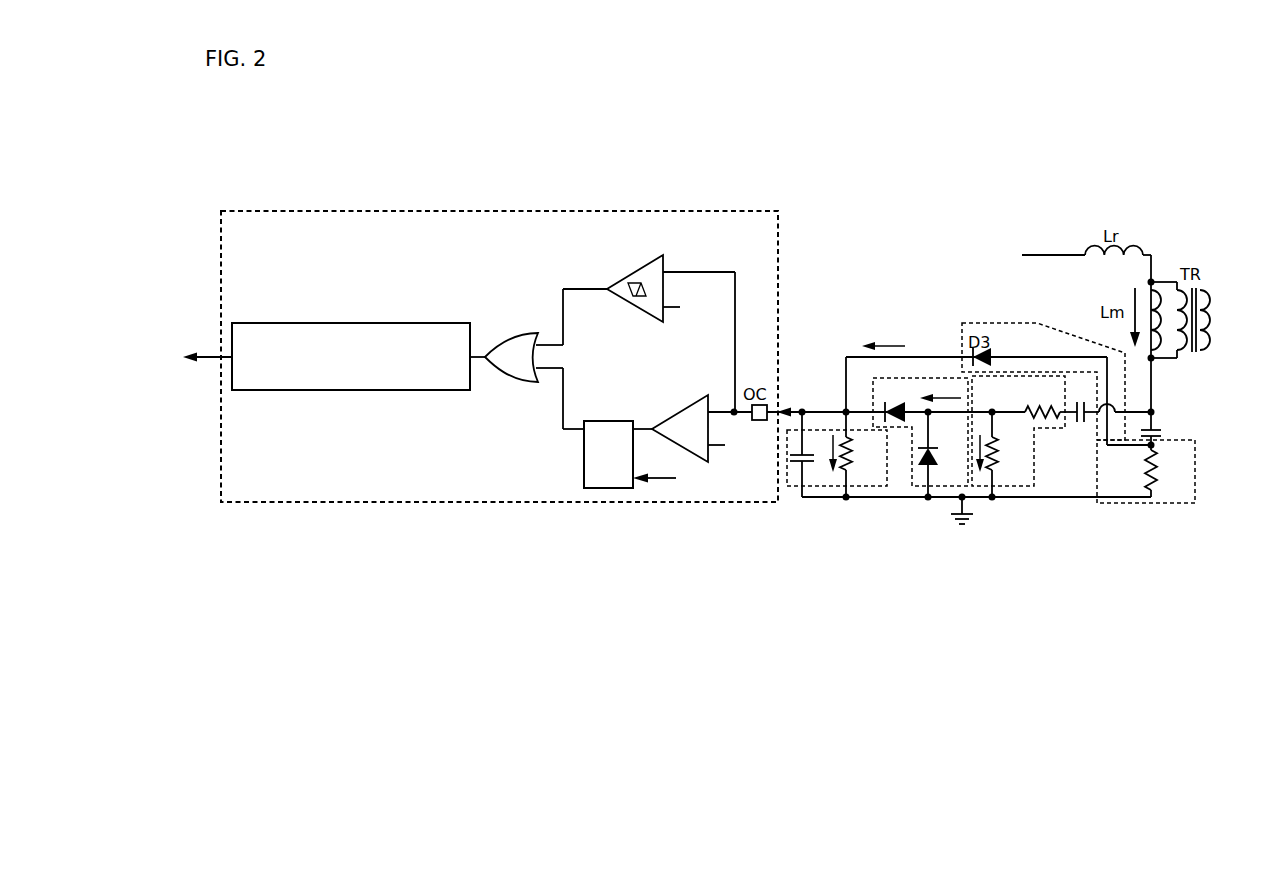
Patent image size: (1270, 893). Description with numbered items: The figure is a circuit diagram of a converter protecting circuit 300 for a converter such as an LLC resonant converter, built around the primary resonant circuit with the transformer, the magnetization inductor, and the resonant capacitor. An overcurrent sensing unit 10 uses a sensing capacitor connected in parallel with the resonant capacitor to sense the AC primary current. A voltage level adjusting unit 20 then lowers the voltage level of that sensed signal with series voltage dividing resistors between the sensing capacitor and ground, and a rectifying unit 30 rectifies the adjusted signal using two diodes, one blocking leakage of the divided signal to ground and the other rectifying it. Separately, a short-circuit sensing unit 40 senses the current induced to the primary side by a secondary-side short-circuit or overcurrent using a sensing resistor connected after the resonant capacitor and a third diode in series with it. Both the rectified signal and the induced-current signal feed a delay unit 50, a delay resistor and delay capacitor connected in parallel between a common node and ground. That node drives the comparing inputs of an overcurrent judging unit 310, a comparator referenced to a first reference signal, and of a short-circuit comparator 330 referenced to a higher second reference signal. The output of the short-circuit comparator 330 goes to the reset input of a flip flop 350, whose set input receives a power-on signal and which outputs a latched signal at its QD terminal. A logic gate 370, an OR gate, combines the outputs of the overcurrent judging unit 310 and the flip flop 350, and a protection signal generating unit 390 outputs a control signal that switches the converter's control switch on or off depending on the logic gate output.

The converter protecting circuit 300 is at (512, 211).
The overcurrent judging unit 310 is at (625, 280).
The short-circuit comparator 330 is at (680, 410).
The flip flop 350 is at (607, 490).
The logic gate 370 is at (520, 380).
The protection signal generating unit 390 is at (357, 392).
The overcurrent sensing unit 10 is at (1083, 423).
The voltage level adjusting unit 20 is at (1018, 487).
The rectifying unit 30 is at (938, 488).
The short-circuit sensing unit 40 is at (1143, 504).
The delay unit 50 is at (823, 488).